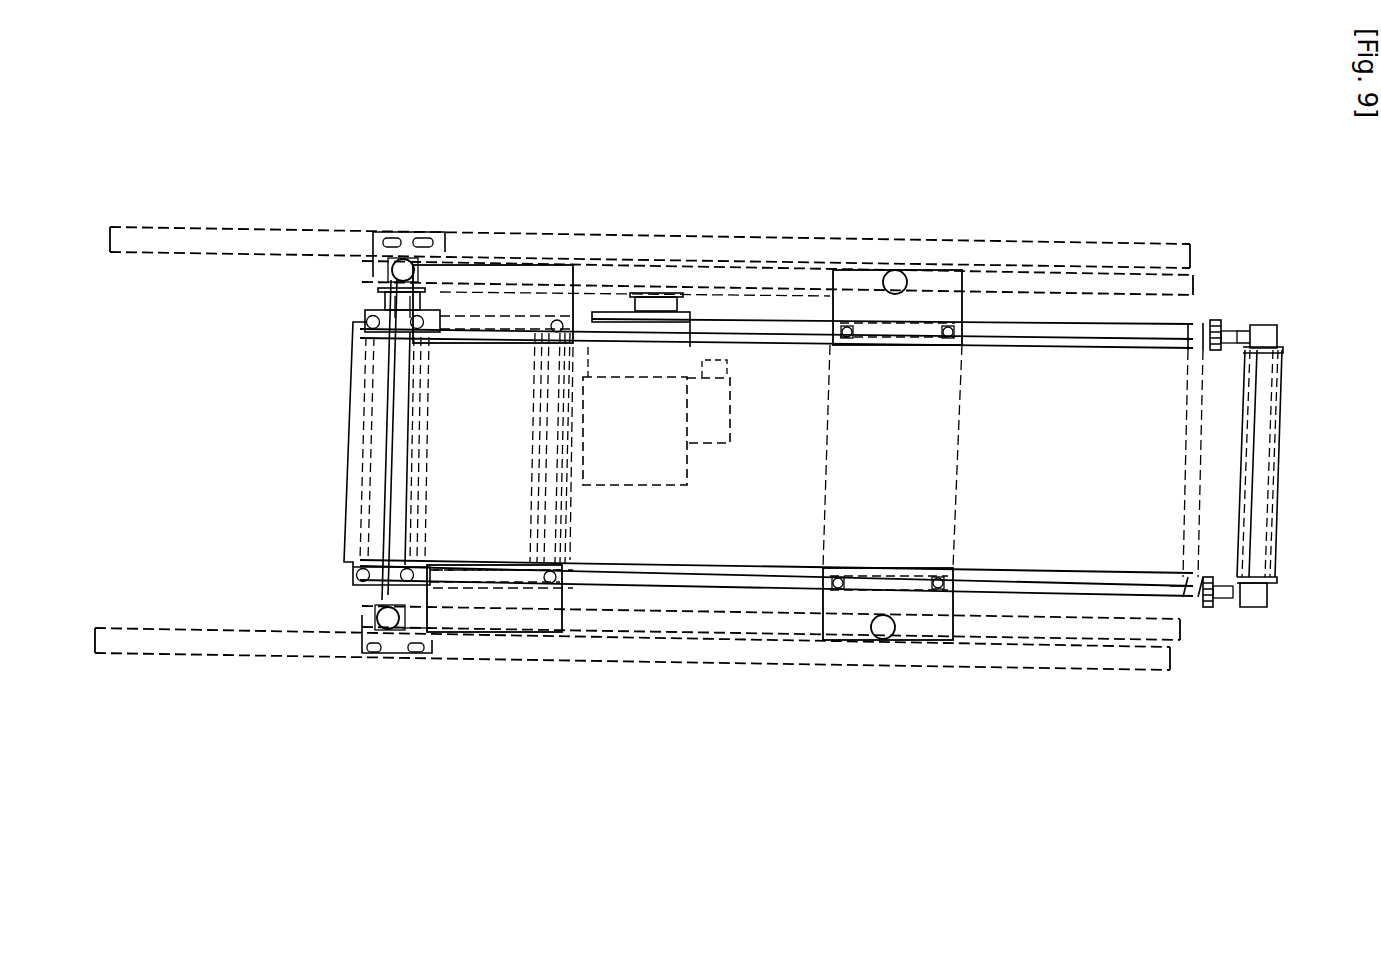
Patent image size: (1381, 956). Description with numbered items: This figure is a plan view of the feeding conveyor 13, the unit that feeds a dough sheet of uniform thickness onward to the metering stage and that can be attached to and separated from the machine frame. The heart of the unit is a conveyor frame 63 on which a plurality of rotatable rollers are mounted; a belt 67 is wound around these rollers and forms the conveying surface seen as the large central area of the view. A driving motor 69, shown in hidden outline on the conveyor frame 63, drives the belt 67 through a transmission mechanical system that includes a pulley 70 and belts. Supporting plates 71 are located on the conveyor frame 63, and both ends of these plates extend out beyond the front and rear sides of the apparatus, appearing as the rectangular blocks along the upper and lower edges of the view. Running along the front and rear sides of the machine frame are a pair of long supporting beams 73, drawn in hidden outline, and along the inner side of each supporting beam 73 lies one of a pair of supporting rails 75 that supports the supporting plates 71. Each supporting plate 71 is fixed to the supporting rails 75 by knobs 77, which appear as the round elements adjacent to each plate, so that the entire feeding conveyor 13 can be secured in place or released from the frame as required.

The feeding conveyor 13 is at (1213, 257).
The conveyor frame 63 is at (1182, 596).
The belt 67 is at (1123, 468).
The driving motor 69 is at (636, 484).
The pulley 70 is at (388, 296).
The supporting plates 71 is at (545, 268).
The supporting beams 73 is at (1005, 243).
The supporting rails 75 is at (1020, 293).
The knobs 77 is at (412, 262).